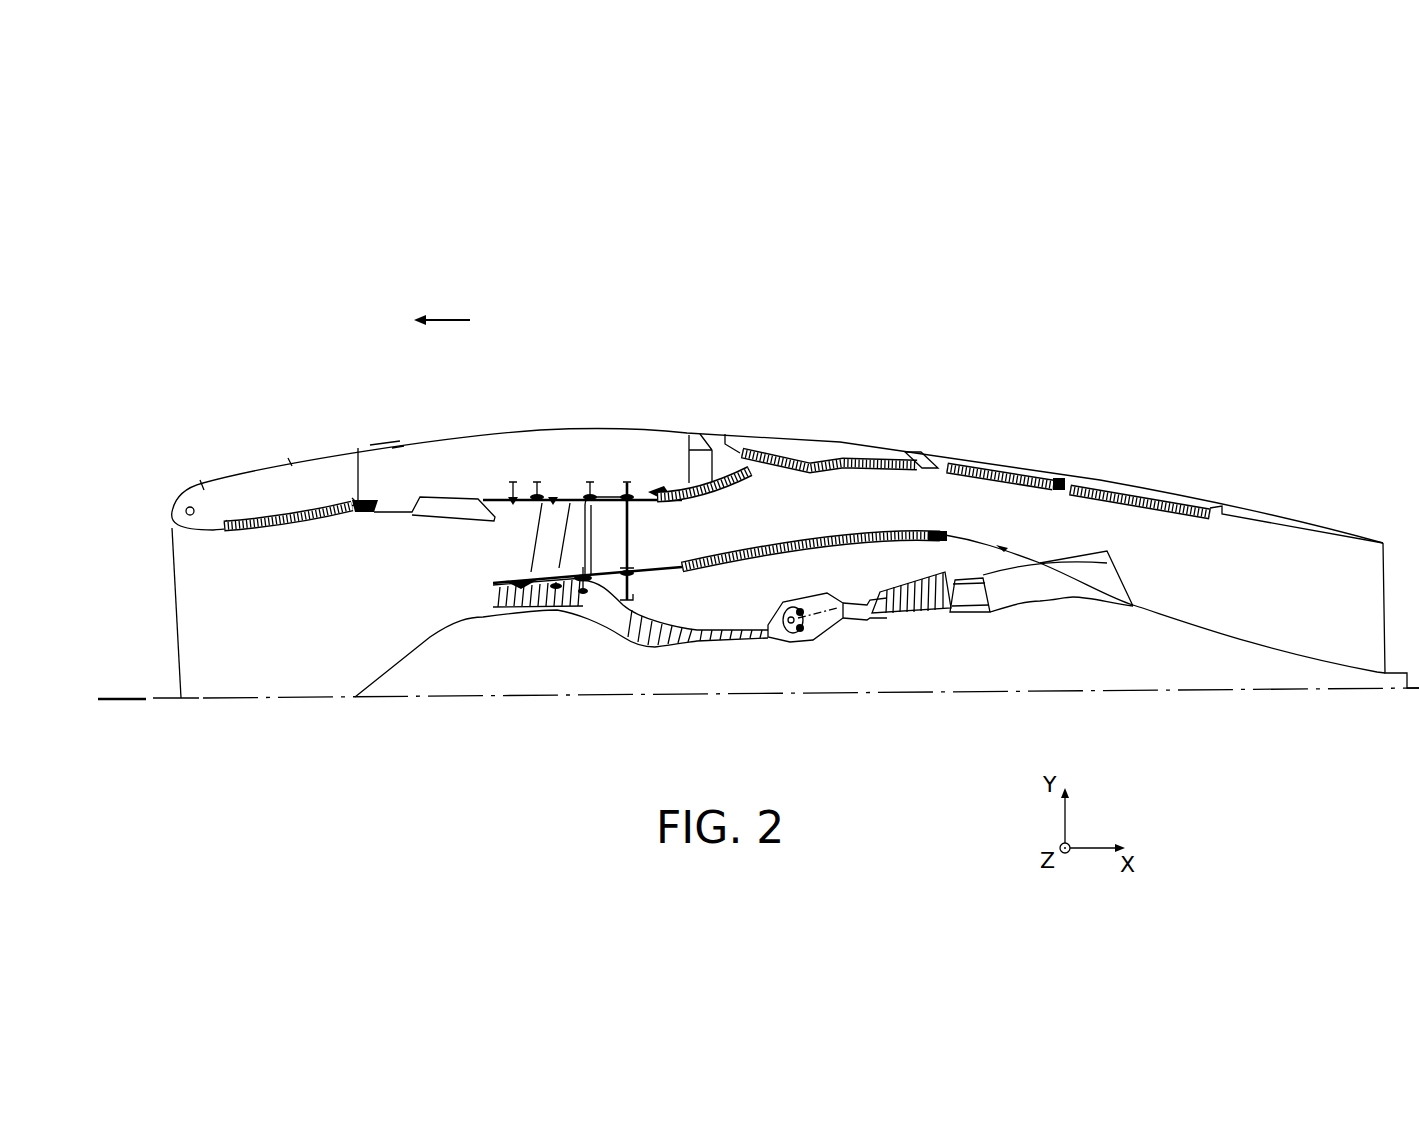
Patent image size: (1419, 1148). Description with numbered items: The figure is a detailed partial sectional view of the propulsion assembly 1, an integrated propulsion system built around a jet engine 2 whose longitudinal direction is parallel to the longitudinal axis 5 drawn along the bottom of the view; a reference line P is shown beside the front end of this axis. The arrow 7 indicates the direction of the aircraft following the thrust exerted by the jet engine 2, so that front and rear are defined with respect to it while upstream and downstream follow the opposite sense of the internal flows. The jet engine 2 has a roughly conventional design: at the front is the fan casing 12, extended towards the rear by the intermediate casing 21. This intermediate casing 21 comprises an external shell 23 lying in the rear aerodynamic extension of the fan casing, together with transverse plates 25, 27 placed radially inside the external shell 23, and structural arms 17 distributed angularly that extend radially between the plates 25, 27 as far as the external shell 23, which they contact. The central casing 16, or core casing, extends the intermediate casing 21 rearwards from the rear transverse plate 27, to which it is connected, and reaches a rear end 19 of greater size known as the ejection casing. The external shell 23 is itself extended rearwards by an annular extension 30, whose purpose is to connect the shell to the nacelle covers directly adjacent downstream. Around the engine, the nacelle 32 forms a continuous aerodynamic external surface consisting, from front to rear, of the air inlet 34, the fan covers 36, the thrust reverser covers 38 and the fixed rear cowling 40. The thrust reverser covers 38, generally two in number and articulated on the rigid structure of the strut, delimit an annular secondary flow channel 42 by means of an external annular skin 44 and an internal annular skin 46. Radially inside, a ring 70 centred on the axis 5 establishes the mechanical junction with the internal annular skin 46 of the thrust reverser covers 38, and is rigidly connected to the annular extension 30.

The propulsion assembly 1 is at (626, 306).
The jet engine 2 is at (374, 633).
The longitudinal axis 5 is at (168, 701).
The arrow 7 is at (441, 320).
The fan casing 12 is at (510, 490).
The central casing 16 is at (729, 626).
The structural arms 17 is at (598, 532).
The rear end 19 is at (919, 576).
The intermediate casing 21 is at (666, 535).
The external shell 23 is at (612, 484).
The transverse plate 25 is at (594, 611).
The transverse plate 27 is at (630, 579).
The annular extension 30 is at (660, 488).
The nacelle 32 is at (313, 442).
The air inlet 34 is at (245, 479).
The fan covers 36 is at (396, 451).
The thrust reverser covers 38 is at (955, 455).
The fixed rear cowling 40 is at (1264, 523).
The annular secondary flow channel 42 is at (909, 510).
The external annular skin 44 is at (719, 491).
The internal annular skin 46 is at (811, 540).
The ring 70 is at (648, 562).
The ground plane P is at (113, 702).